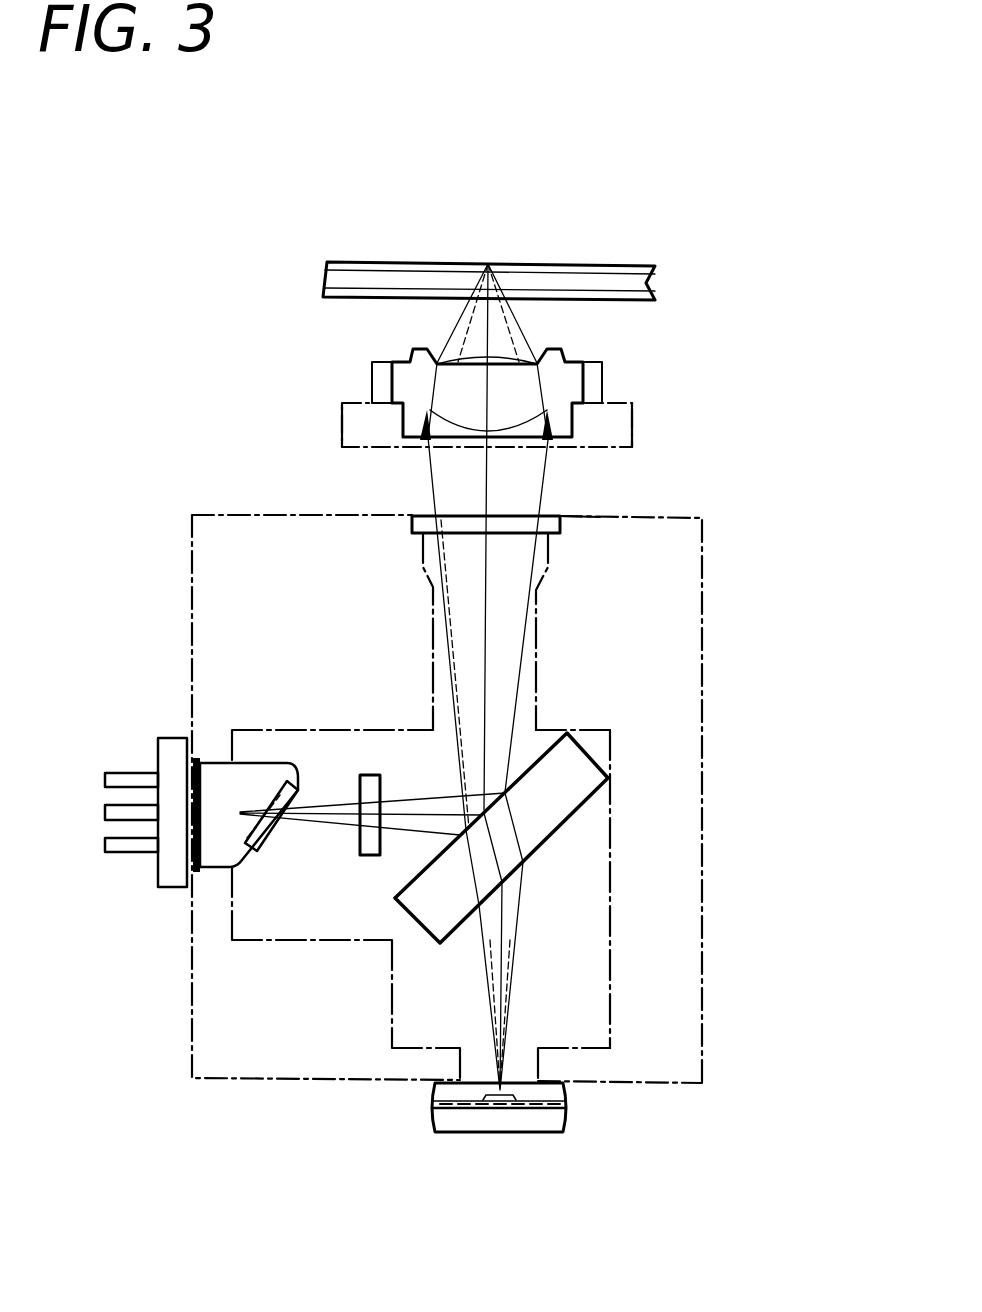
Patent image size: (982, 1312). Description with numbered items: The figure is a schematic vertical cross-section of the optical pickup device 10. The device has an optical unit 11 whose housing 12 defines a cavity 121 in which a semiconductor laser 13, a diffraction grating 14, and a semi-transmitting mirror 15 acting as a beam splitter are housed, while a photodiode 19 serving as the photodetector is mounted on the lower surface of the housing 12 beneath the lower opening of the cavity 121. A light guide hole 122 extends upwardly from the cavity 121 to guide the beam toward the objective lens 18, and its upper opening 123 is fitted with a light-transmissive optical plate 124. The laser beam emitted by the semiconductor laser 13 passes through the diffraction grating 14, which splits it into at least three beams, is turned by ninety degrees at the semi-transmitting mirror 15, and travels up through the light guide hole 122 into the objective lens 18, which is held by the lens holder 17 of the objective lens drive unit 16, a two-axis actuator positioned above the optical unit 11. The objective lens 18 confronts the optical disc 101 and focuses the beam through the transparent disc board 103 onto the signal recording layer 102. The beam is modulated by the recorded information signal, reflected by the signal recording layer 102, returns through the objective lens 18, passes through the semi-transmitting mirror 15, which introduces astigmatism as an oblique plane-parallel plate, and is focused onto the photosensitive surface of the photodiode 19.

The optical pickup device 10 is at (745, 351).
The optical unit 11 is at (192, 556).
The housing 12 is at (702, 630).
The semiconductor laser 13 is at (217, 775).
The diffraction grating 14 is at (370, 778).
The semi-transmitting mirror 15 is at (563, 763).
The objective lens drive unit 16 is at (455, 316).
The lens holder 17 is at (603, 402).
The objective lens 18 is at (417, 370).
The photodiode 19 is at (470, 1118).
The optical disc 101 is at (612, 288).
The signal recording layer 102 is at (563, 262).
The disc board 103 is at (337, 283).
The cavity 121 is at (609, 890).
The light guide hole 122 is at (543, 627).
The upper opening 123 is at (552, 530).
The light-transmissive optical plate 124 is at (420, 515).